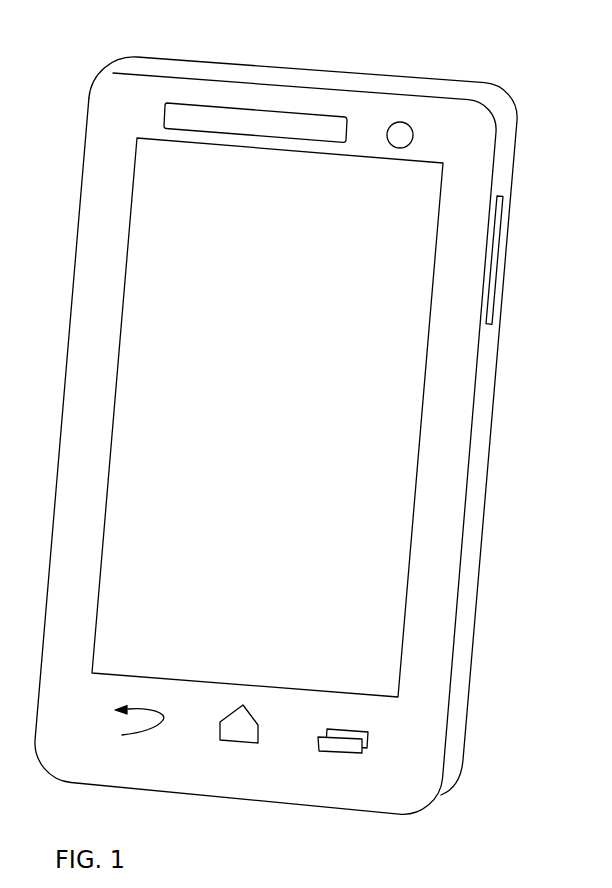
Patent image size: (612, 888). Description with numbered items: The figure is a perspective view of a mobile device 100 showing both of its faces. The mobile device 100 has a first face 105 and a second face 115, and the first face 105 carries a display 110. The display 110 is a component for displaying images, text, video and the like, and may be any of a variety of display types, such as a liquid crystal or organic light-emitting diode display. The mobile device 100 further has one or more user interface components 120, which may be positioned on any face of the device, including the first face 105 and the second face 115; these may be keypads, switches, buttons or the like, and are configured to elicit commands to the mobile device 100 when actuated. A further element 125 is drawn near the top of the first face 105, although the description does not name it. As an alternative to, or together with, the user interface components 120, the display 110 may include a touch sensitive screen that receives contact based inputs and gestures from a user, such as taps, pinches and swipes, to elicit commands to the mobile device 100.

The mobile device 100 is at (432, 62).
The first face 105 is at (438, 457).
The display 110 is at (400, 215).
The second face 115 is at (488, 380).
The user interface components 120 is at (501, 260).
The camera 125 is at (399, 134).